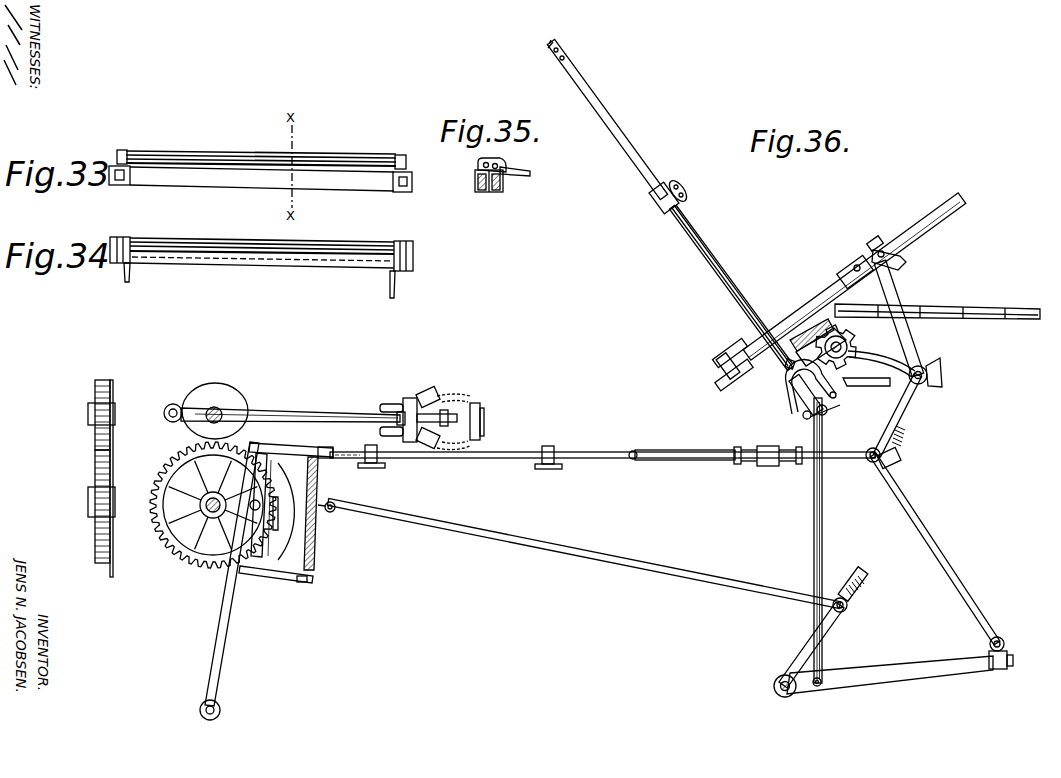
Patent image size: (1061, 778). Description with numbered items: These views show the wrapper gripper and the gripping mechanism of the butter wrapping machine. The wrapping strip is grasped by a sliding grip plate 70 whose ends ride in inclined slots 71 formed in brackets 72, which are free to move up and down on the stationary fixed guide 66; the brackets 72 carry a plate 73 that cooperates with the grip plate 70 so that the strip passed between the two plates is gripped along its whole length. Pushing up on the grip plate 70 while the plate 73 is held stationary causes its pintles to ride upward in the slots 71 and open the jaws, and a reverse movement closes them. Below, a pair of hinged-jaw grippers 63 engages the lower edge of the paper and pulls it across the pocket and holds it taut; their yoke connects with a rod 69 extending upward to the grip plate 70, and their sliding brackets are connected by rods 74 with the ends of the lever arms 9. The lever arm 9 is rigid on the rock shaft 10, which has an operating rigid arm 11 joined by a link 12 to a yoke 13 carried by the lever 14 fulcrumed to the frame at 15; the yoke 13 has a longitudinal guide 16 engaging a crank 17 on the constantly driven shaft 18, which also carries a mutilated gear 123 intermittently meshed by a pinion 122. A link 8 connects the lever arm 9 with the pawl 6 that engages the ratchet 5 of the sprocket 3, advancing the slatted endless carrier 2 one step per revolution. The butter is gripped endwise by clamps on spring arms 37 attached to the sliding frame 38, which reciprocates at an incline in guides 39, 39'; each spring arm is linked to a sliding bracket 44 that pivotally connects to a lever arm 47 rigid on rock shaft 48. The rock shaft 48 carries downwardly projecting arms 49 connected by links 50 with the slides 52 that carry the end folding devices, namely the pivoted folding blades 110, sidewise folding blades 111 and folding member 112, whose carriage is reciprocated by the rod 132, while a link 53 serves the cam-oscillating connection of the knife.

In FIG. 36, the slatted endless carrier 2 is at (1000, 306).
In FIG. 36, the sprocket 3 is at (846, 344).
In FIG. 36, the ratchet 5 is at (885, 352).
In FIG. 36, the pawl 6 is at (782, 366).
In FIG. 36, the link 8 is at (824, 526).
In FIG. 36, the lever arm 9 is at (880, 660).
In FIG. 36, the rock shaft 10 is at (770, 698).
In FIG. 36, the operating rigid arm 11 is at (806, 644).
In FIG. 36, the link 12 is at (684, 572).
In FIG. 36, the yoke 13 is at (294, 540).
In FIG. 36, the lever 14 is at (228, 624).
In FIG. 36, the fulcrum 15 is at (220, 702).
In FIG. 36, the longitudinal guide 16 is at (276, 458).
In FIG. 36, the crank 17 is at (272, 496).
In FIG. 36, the shaft 18 is at (206, 520).
In FIG. 36, the spring arms 37 is at (324, 534).
In FIG. 36, the sliding frame 38 is at (918, 226).
In FIG. 36, the guide 39 is at (727, 357).
In FIG. 36, the guide 39' is at (881, 241).
In FIG. 36, the sliding bracket 44 is at (840, 258).
In FIG. 36, the lever arm 47 is at (908, 294).
In FIG. 36, the rock shaft 48 is at (940, 376).
In FIG. 36, the downwardly projecting arms 49 is at (910, 436).
In FIG. 36, the links 50 is at (748, 466).
In FIG. 36, the slides 52 is at (507, 450).
In FIG. 36, the link 53 is at (804, 416).
In FIG. 36, the grippers 63 is at (788, 392).
In FIG. 33, the fixed guide 66 is at (120, 185).
In FIG. 36, the fixed guide 66 is at (622, 140).
In FIG. 34, the rod 69 is at (122, 280).
In FIG. 35, the rod 69 is at (521, 178).
In FIG. 36, the rod 69 is at (712, 246).
In FIG. 33, the grip plate 70 is at (370, 144).
In FIG. 34, the grip plate 70 is at (318, 250).
In FIG. 35, the inclined slots 71 is at (500, 162).
In FIG. 36, the inclined slots 71 is at (686, 190).
In FIG. 34, the brackets 72 is at (112, 262).
In FIG. 35, the brackets 72 is at (475, 172).
In FIG. 36, the brackets 72 is at (668, 184).
In FIG. 34, the plate 73 is at (291, 262).
In FIG. 36, the rods 74 is at (922, 504).
In FIG. 36, the pivoted folding blades 110 is at (452, 400).
In FIG. 36, the sidewise folding blades 111 is at (436, 386).
In FIG. 36, the folding member 112 is at (484, 414).
In FIG. 36, the pinion 122 is at (216, 388).
In FIG. 36, the mutilated gear 123 is at (170, 462).
In FIG. 36, the rod 132 is at (296, 414).